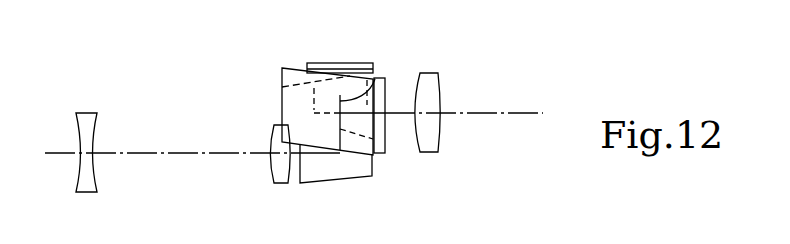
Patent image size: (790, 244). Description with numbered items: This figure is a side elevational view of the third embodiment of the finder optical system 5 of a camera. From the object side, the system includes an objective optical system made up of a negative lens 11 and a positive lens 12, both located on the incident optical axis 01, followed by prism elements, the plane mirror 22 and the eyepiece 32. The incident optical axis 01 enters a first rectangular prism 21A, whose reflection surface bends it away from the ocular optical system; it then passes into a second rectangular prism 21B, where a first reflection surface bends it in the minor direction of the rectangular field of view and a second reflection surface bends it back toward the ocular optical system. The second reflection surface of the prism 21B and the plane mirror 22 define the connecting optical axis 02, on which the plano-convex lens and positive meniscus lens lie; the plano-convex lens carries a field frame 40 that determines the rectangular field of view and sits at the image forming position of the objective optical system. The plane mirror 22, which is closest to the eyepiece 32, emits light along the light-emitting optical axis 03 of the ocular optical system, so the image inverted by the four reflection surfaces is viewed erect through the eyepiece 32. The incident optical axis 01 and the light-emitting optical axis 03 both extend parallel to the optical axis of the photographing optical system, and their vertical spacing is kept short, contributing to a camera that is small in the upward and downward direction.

The finder optical system 5 is at (279, 51).
The negative lens 11 is at (92, 130).
The positive lens 12 is at (273, 167).
The incident optical axis 01 is at (192, 116).
The connecting optical axis 02 is at (385, 74).
The light-emitting optical axis 03 is at (515, 120).
The first rectangular prism 21A is at (352, 165).
The second rectangular prism 21B is at (340, 62).
The plane mirror 22 is at (282, 108).
The eyepiece 32 is at (433, 93).
The field frame 40 is at (281, 86).